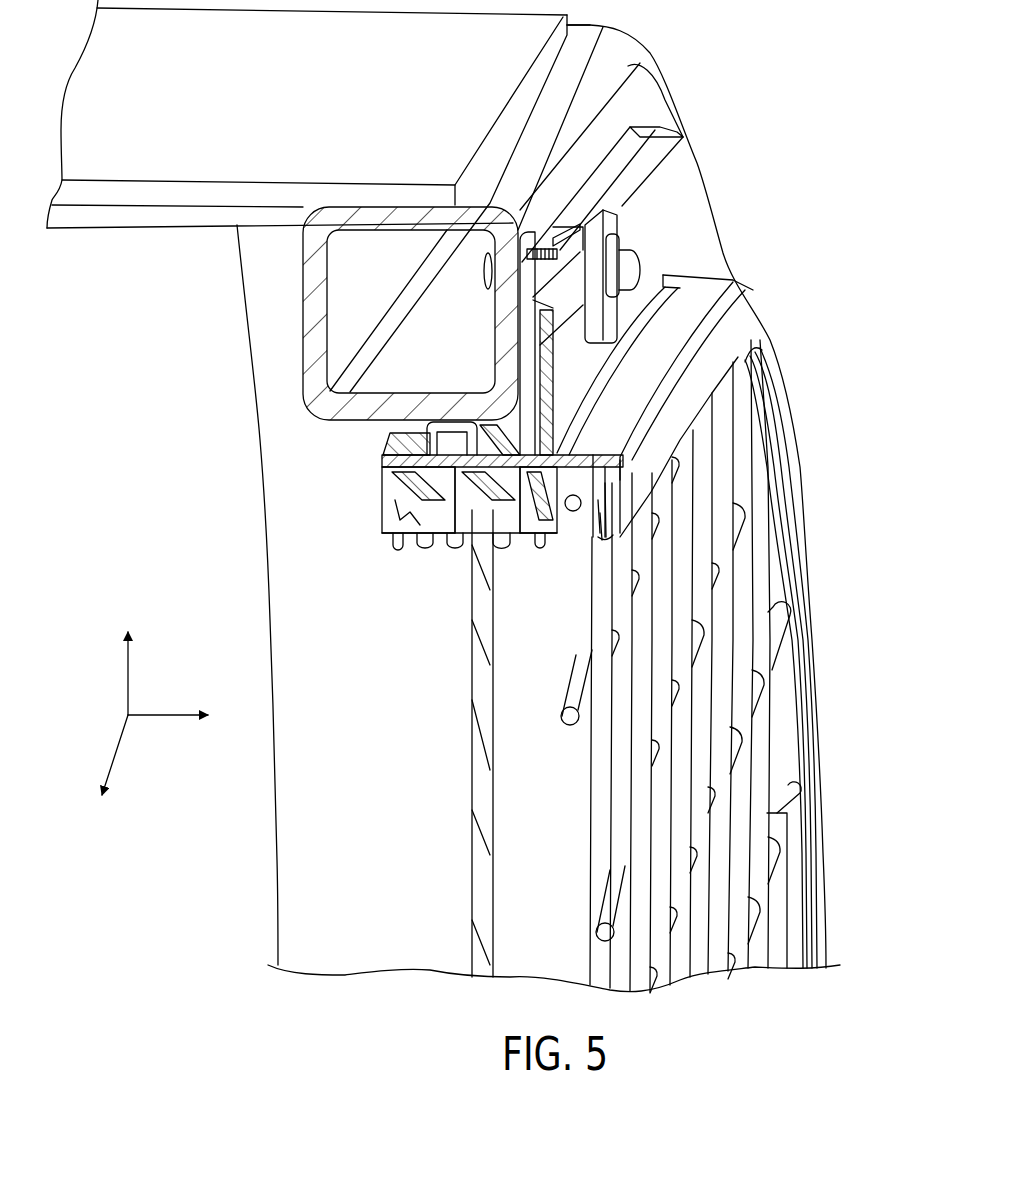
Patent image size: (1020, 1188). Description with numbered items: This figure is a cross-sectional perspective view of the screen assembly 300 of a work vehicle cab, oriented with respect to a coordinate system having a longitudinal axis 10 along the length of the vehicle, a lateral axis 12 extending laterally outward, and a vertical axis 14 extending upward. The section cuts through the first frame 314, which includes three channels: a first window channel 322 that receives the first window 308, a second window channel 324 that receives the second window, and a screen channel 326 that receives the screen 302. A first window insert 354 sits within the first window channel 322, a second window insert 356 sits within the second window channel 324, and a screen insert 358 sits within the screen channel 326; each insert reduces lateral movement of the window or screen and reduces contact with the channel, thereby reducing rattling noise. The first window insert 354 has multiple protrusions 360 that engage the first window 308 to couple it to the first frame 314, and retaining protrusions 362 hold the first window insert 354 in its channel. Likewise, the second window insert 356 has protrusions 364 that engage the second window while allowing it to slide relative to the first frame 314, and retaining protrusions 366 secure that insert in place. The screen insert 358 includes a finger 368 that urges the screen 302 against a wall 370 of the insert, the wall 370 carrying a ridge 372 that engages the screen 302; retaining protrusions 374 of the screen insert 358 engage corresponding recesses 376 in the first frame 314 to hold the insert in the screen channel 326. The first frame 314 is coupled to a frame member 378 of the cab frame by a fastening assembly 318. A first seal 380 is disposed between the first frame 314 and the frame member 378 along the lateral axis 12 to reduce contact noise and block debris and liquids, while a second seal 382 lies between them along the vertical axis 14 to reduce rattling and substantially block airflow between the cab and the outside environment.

The longitudinal axis 10 is at (117, 750).
The lateral axis 12 is at (165, 715).
The vertical axis 14 is at (128, 676).
The screen assembly 300 is at (787, 292).
The screen 302 is at (757, 770).
The first window 308 is at (484, 778).
The first frame 314 is at (778, 407).
The fastening assembly 318 is at (630, 220).
The first window channel 322 is at (605, 268).
The second window channel 324 is at (402, 455).
The screen channel 326 is at (628, 462).
The first window insert 354 is at (505, 533).
The second window insert 356 is at (405, 505).
The screen insert 358 is at (548, 453).
The protrusions 360 is at (428, 450).
The retaining protrusions 362 is at (517, 443).
The protrusions 364 is at (412, 535).
The retaining protrusions 366 is at (397, 500).
The finger 368 is at (607, 481).
The wall 370 is at (605, 483).
The ridge 372 is at (602, 527).
The retaining protrusions 374 is at (538, 530).
The recesses 376 is at (604, 520).
The frame member 378 is at (372, 252).
The first seal 380 is at (628, 147).
The second seal 382 is at (430, 448).